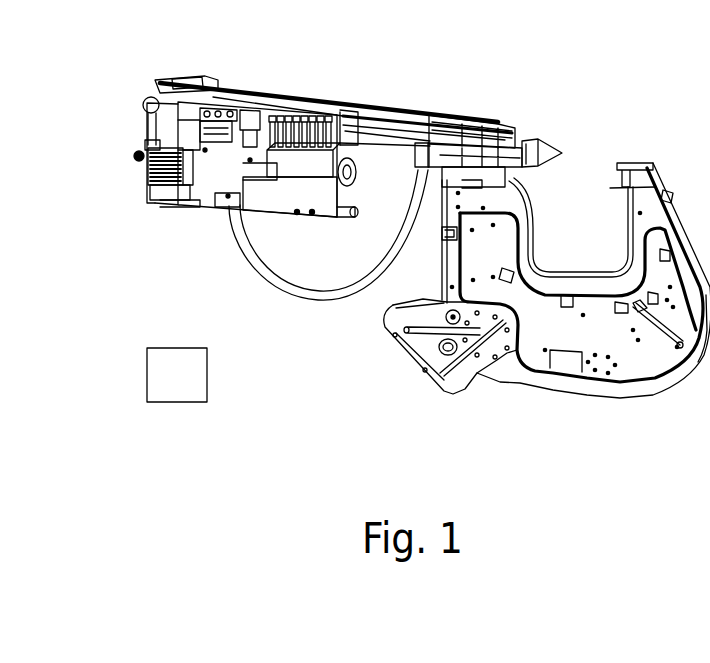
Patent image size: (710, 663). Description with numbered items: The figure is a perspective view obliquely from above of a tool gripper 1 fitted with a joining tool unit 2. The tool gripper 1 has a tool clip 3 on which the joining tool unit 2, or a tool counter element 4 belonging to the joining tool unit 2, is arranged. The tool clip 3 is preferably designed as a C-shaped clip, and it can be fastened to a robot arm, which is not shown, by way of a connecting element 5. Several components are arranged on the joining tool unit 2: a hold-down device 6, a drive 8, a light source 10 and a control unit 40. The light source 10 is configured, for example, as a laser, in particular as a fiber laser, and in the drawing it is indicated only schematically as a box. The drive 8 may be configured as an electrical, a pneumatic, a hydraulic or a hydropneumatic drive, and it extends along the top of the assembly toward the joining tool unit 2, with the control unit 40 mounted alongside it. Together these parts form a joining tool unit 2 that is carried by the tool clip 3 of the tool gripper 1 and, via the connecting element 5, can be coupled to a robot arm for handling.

The tool gripper 1 is at (482, 64).
The joining tool unit 2 is at (537, 131).
The tool clip 3 is at (630, 363).
The tool counter element 4 is at (617, 158).
The connecting element 5 is at (452, 396).
The hold-down device 6 is at (545, 170).
The drive 8 is at (387, 107).
The light source 10 is at (183, 392).
The control unit 40 is at (152, 200).